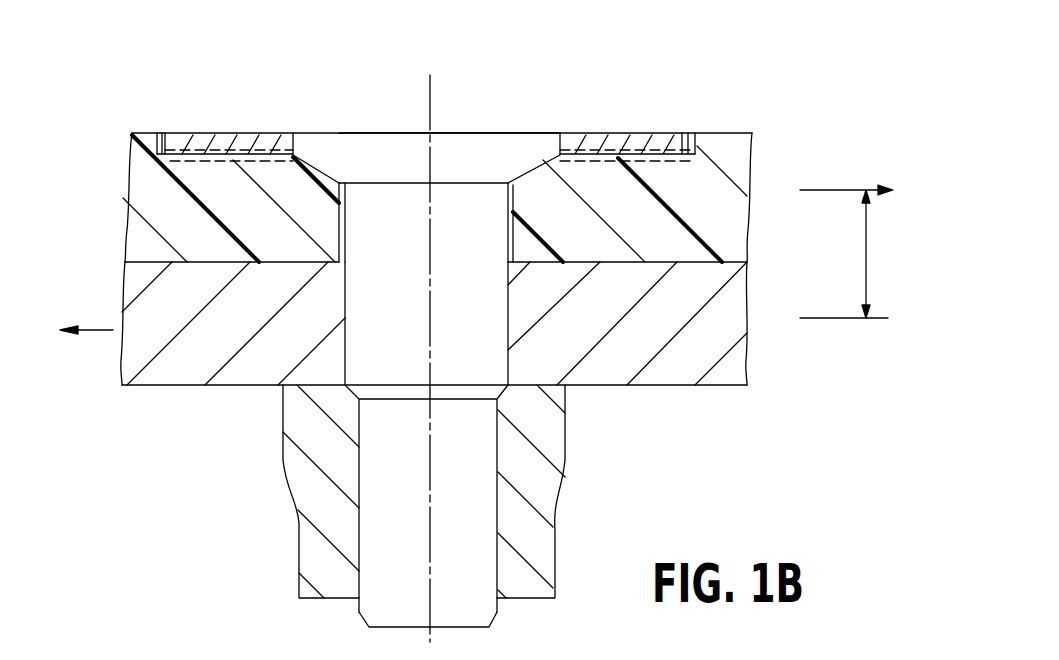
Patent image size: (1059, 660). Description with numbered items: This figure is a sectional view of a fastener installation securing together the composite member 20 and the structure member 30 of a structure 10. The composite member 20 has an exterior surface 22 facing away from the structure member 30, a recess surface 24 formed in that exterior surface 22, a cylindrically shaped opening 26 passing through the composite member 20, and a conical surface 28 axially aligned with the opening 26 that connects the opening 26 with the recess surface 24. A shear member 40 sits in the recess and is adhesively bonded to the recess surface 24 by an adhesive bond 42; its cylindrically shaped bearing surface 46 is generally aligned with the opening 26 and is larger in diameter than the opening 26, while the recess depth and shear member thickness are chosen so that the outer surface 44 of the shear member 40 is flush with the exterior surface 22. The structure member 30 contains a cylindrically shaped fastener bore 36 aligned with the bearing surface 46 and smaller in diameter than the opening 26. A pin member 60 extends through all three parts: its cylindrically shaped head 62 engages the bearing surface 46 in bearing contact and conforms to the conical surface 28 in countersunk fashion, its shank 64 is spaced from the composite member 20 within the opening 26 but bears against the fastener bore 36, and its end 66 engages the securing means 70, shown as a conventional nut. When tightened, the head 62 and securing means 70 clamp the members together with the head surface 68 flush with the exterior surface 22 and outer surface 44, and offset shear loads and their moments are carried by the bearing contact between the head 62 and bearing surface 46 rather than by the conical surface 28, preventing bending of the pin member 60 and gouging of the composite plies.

The structure 10 is at (481, 330).
The composite member 20 is at (460, 180).
The exterior surface 22 is at (749, 109).
The recess surface 24 is at (696, 133).
The opening 26 is at (513, 237).
The conical surface 28 is at (540, 166).
The structure member 30 is at (460, 323).
The fastener bore 36 is at (500, 340).
The shear member 40 is at (427, 128).
The adhesive bond 42 is at (631, 152).
The outer surface 44 is at (427, 128).
The bearing surface 46 is at (558, 147).
The pin member 60 is at (470, 357).
The head 62 is at (470, 357).
The shank 64 is at (507, 205).
The end 66 is at (479, 628).
The head surface 68 is at (476, 133).
The securing means 70 is at (556, 581).